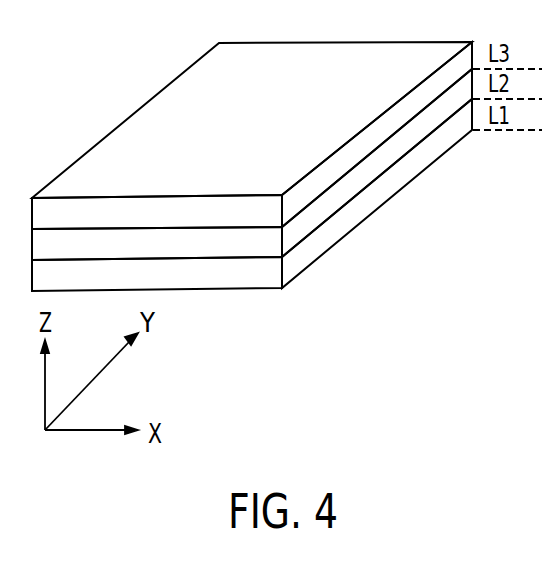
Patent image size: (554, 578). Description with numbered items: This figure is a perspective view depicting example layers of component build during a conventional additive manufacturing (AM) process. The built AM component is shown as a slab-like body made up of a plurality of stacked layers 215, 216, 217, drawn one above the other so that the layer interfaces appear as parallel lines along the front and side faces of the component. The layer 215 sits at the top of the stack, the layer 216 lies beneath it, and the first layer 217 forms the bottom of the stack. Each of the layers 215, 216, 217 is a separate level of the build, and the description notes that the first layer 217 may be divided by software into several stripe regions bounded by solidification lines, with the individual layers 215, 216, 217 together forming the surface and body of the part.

The layer 215 is at (380, 132).
The layer 216 is at (363, 175).
The first layer 217 is at (352, 215).